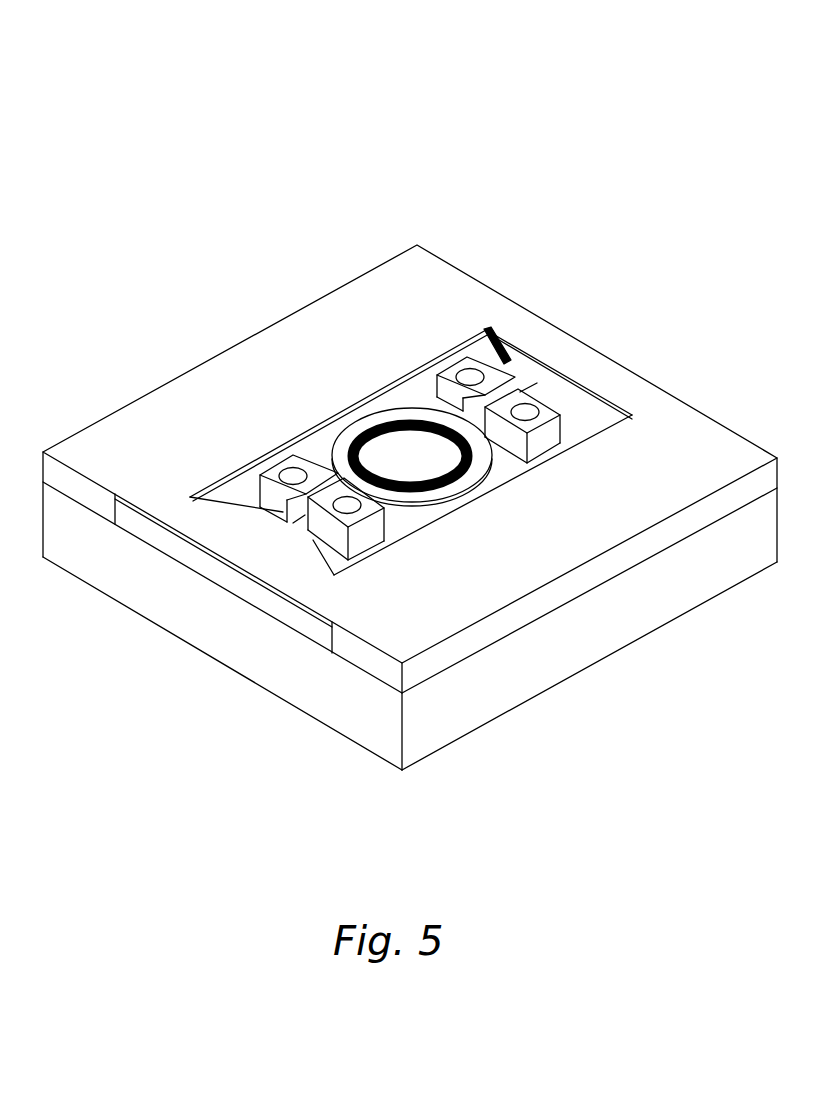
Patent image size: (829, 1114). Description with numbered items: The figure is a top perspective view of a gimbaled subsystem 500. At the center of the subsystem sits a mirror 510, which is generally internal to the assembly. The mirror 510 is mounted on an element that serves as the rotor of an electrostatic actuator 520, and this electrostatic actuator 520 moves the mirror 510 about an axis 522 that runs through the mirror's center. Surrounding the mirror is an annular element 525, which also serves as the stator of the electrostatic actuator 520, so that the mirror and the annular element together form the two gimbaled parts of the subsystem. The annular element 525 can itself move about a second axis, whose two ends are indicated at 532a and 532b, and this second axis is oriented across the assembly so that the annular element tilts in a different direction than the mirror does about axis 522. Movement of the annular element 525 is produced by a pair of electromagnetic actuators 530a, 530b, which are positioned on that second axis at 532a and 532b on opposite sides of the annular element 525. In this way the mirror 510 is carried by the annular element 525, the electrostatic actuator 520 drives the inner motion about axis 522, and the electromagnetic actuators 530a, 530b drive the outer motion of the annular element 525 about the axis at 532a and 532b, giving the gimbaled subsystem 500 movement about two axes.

The gimbaled subsystem 500 is at (147, 237).
The mirror 510 is at (422, 448).
The electrostatic actuator 520 is at (350, 446).
The axis 522 is at (369, 431).
The annular element 525 is at (477, 450).
The electromagnetic actuator 530a is at (495, 372).
The electromagnetic actuator 530b is at (267, 478).
The axis 532a is at (556, 375).
The axis 532b is at (282, 530).